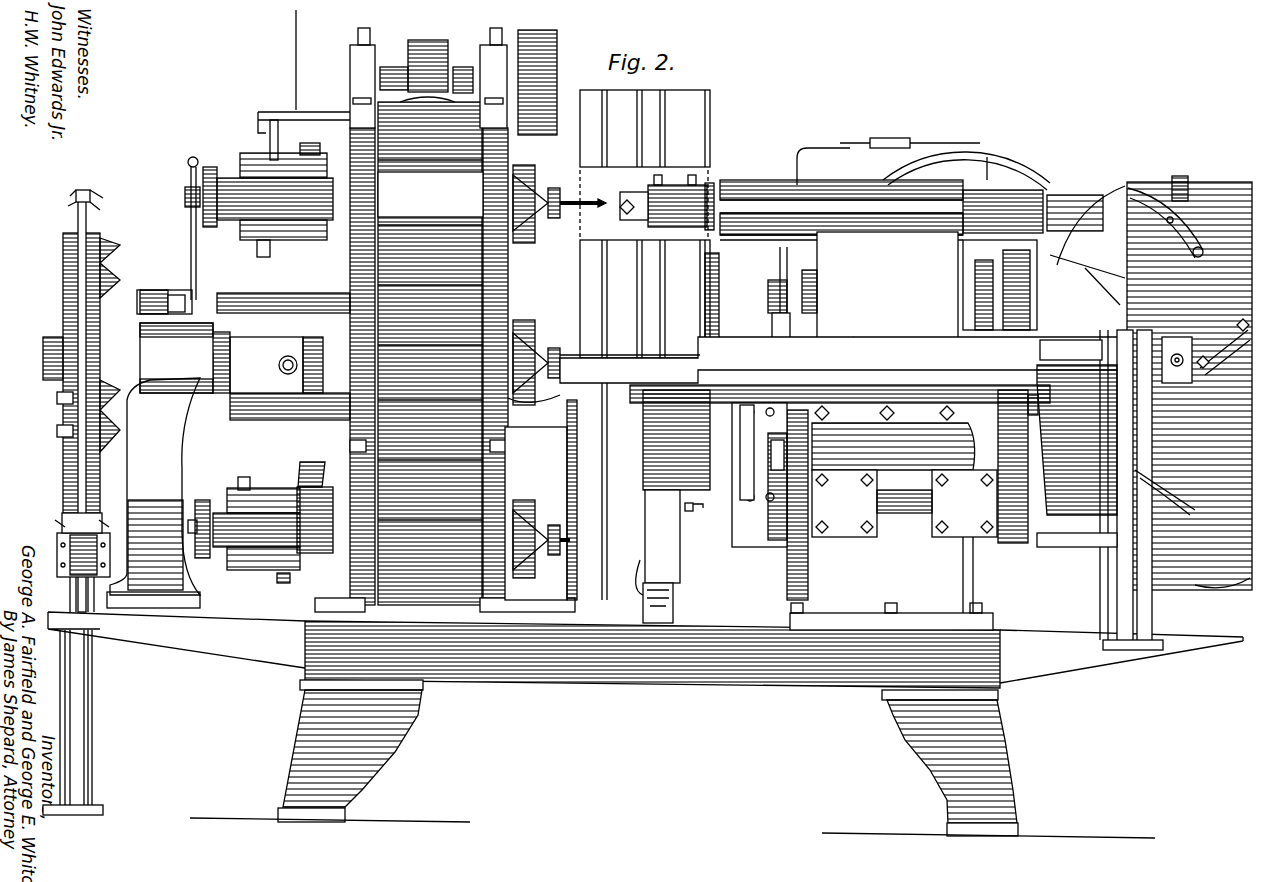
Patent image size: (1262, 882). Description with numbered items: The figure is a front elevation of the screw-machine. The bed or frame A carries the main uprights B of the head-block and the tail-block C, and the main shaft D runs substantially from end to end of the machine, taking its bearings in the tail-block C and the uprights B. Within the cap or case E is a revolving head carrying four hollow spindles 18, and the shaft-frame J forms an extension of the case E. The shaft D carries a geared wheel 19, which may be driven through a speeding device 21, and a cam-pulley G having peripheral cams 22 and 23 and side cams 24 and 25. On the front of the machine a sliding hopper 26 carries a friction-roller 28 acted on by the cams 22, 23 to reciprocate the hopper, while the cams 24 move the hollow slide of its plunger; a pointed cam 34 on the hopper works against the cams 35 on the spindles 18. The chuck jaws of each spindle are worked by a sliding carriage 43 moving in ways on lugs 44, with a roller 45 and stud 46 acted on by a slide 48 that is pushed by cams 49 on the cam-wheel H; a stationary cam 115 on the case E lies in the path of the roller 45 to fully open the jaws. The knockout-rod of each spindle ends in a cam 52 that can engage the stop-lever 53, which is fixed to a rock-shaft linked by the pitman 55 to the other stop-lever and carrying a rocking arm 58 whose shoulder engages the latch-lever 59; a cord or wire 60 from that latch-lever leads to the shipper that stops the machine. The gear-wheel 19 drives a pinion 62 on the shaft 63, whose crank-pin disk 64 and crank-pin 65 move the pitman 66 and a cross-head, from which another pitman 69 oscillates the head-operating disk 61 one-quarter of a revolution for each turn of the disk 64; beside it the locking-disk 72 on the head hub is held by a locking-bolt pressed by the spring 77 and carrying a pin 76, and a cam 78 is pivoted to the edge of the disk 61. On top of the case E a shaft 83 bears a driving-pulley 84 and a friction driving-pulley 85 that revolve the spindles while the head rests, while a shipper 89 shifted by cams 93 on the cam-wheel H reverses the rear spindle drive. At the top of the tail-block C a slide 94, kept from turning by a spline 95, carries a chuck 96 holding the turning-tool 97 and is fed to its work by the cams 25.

The bed or frame A is at (643, 725).
The main uprights of the head-block B is at (368, 489).
The tail-block C is at (927, 296).
The main shaft D is at (43, 362).
The cap or case E is at (445, 320).
The cam-pulley G is at (1176, 416).
The cam-wheel H is at (63, 276).
The shaft-frame J is at (150, 320).
The spindles 18 is at (555, 196).
The geared wheel 19 is at (1030, 450).
The speeding device 21 is at (1032, 180).
The peripheral cams 22 is at (1182, 178).
The peripheral cams 23 is at (1128, 191).
The side-acting cams 24 is at (1066, 204).
The cams 25 is at (1090, 258).
The sliding hopper 26 is at (645, 224).
The stud or friction-roller 28 is at (1177, 359).
The pointed cam 34 is at (553, 406).
The cams 35 is at (535, 176).
The sliding carriage 43 is at (295, 238).
The lugs 44 is at (255, 433).
The roller 45 is at (265, 583).
The stud 46 is at (262, 256).
The slide 48 is at (176, 358).
The cams 49 is at (107, 264).
The cam 52 is at (185, 197).
The stop-lever 53 is at (201, 178).
The pitman 55 is at (197, 264).
The rocking arm 58 is at (285, 140).
The latch-lever 59 is at (258, 118).
The cord or wire 60 is at (296, 75).
The head-operating disk 61 is at (720, 300).
The pinion 62 is at (1012, 542).
The shaft 63 is at (905, 495).
The crank-pin disk 64 is at (790, 562).
The crank-pin 65 is at (760, 519).
The pitman 66 is at (777, 486).
The pitman 69 is at (755, 430).
The locking-disk 72 is at (663, 480).
The laterally-projecting pin 76 is at (688, 511).
The spring 77 is at (672, 608).
The cam 78 is at (703, 505).
The shaft 83 is at (396, 74).
The driving-pulley 84 is at (537, 82).
The friction driving-pulley 85 is at (426, 48).
The shipper 89 is at (178, 297).
The cams 93 is at (92, 200).
The slide 94 is at (712, 184).
The spline 95 is at (965, 212).
The chuck 96 is at (677, 201).
The roughing-box or turning-tool 97 is at (622, 216).
The stationary cam 115 is at (310, 474).